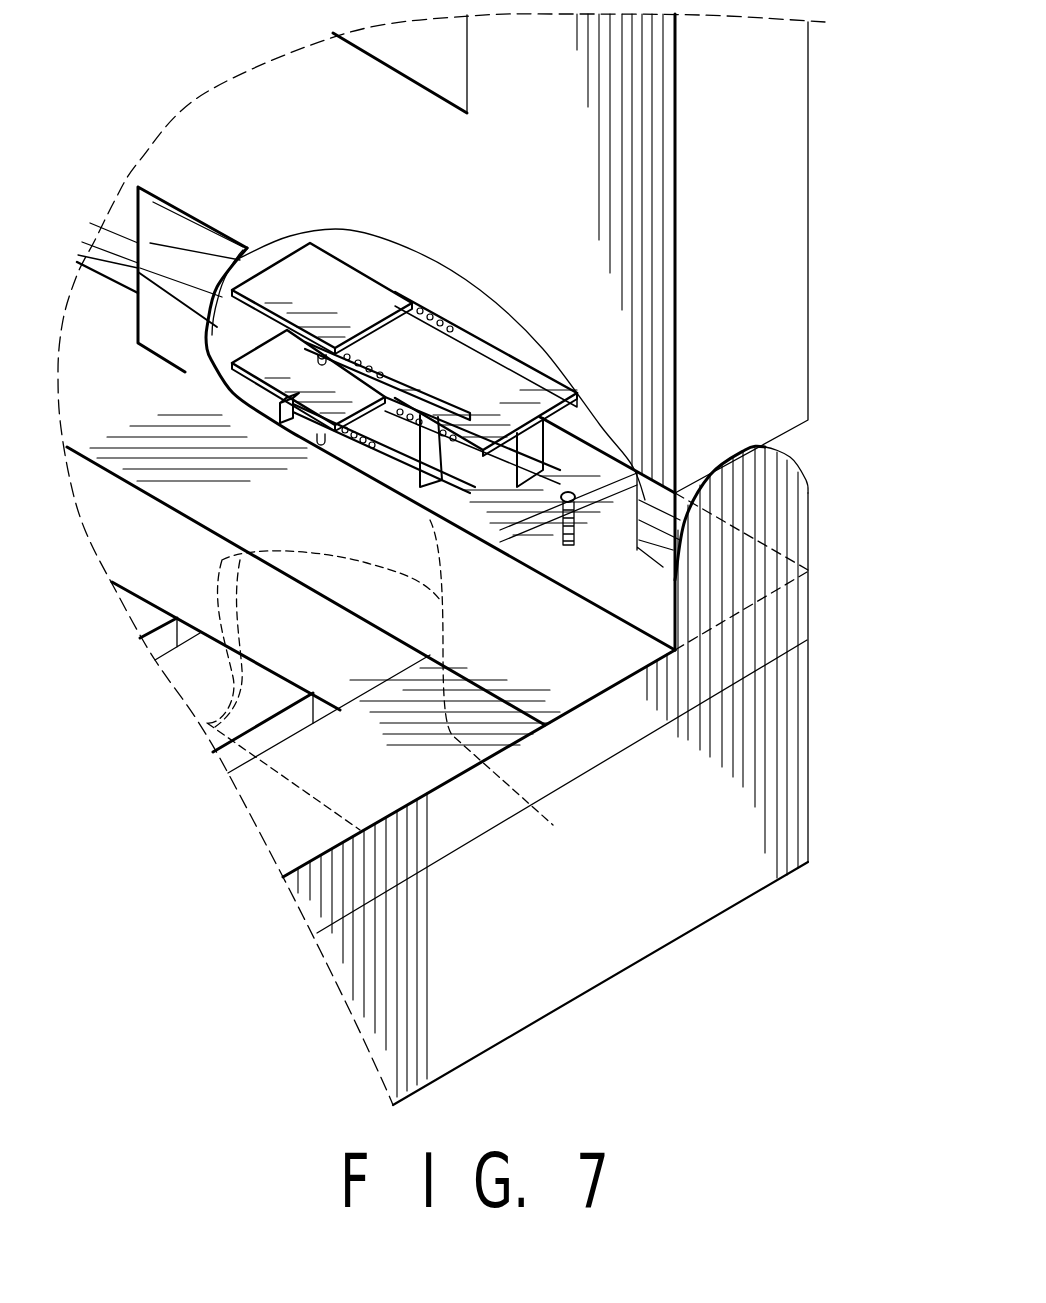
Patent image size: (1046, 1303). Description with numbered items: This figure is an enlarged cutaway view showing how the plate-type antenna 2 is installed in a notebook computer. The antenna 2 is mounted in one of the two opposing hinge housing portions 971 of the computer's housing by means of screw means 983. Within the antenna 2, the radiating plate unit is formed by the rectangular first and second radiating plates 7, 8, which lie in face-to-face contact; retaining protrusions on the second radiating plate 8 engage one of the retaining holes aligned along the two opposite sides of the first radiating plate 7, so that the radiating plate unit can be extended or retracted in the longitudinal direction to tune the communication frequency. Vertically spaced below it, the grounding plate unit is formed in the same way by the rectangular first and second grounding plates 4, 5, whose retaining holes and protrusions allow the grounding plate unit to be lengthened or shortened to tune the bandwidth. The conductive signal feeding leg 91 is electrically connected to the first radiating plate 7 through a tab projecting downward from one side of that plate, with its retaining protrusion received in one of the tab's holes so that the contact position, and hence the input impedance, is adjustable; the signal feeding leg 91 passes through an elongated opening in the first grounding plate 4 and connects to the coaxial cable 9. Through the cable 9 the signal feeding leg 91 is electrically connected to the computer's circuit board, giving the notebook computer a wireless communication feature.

The plate-type antenna 2 is at (496, 272).
The first grounding plate 4 is at (560, 480).
The second grounding plate 5 is at (166, 298).
The first radiating plate 7 is at (497, 387).
The second radiating plate 8 is at (315, 287).
The coaxial cable 9 is at (500, 787).
The signal feeding leg 91 is at (492, 485).
The hinge housing portion 971 is at (735, 603).
The screw means 983 is at (645, 500).